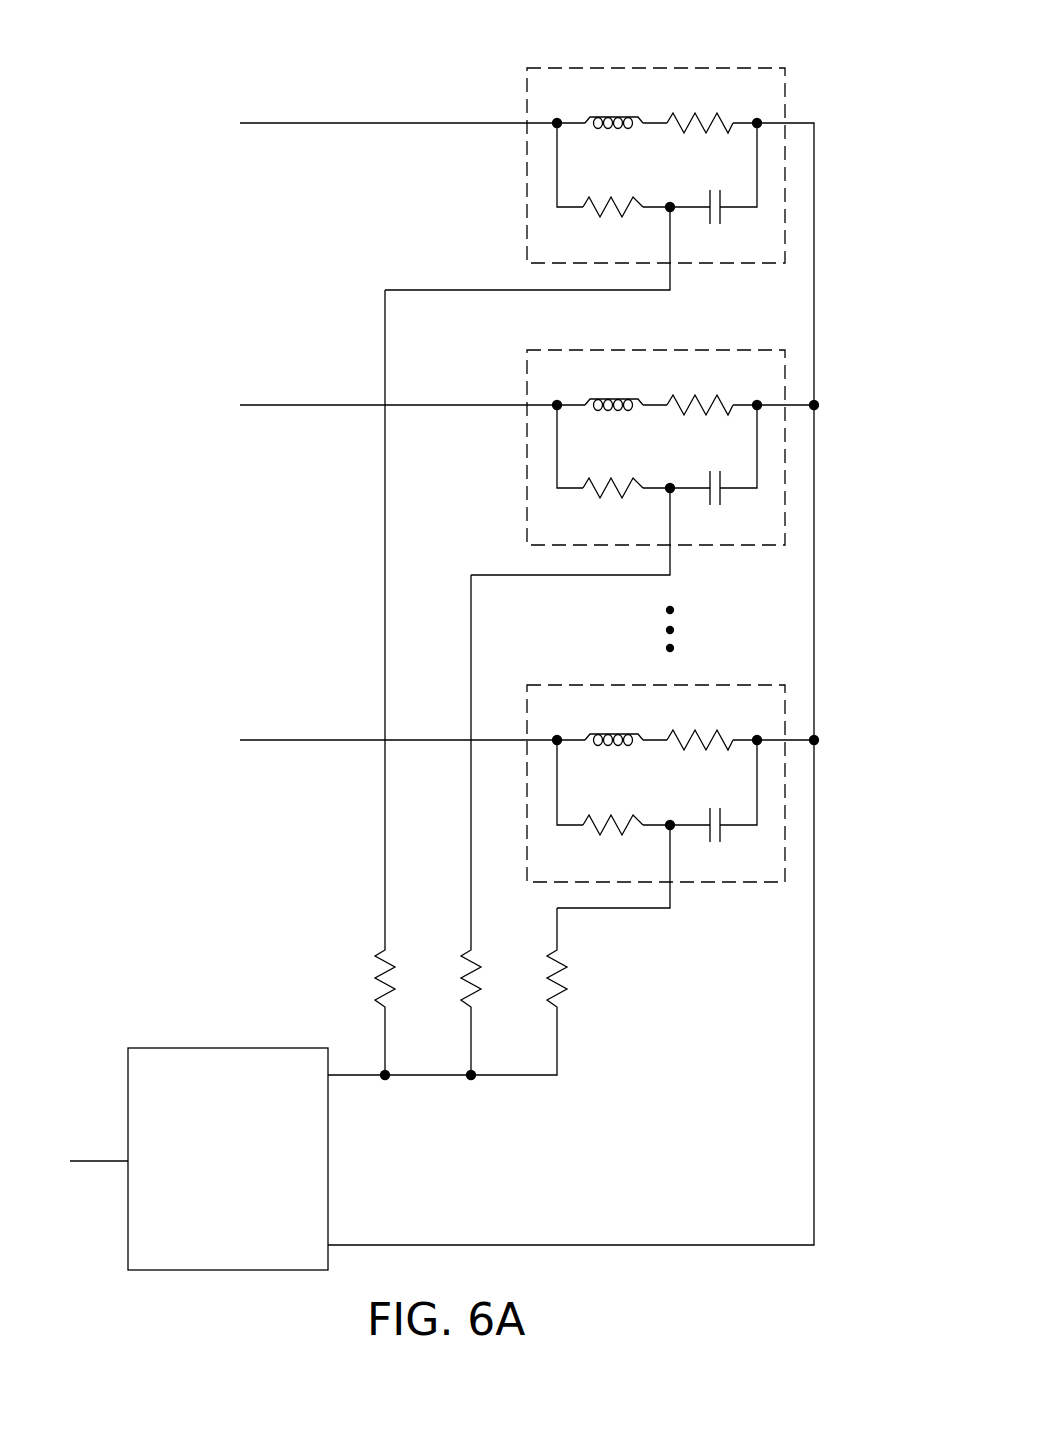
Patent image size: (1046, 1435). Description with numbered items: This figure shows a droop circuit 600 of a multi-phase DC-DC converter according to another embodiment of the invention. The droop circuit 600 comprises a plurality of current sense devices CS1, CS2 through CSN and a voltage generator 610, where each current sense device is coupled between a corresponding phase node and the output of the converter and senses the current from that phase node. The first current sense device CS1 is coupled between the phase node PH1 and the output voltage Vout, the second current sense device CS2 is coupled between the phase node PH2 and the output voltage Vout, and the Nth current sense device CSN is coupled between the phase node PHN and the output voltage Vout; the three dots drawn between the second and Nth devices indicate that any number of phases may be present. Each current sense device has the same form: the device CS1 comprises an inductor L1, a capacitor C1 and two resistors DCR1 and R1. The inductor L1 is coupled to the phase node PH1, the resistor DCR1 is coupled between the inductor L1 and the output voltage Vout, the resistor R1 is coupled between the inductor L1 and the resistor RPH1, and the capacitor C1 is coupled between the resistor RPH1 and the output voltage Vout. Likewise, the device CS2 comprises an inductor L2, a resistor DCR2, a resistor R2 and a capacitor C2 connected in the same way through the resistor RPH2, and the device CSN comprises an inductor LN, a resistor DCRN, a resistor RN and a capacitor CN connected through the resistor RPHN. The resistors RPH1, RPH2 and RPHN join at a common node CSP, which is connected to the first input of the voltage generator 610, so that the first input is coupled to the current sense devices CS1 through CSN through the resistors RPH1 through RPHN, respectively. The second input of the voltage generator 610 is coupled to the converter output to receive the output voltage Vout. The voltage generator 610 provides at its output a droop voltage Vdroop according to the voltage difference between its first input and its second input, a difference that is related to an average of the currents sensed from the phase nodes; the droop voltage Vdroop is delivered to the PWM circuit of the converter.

The droop circuit 600 is at (148, 66).
The voltage generator 610 is at (155, 1048).
The current sense device CS1 is at (656, 146).
The current sense device CS2 is at (656, 428).
The current sense device CSN is at (656, 764).
The inductor L1 is at (592, 116).
The inductor L2 is at (592, 398).
The inductor LN is at (592, 733).
The resistor DCR1 is at (684, 116).
The resistor DCR2 is at (684, 398).
The resistor DCRN is at (684, 733).
The resistor R1 is at (630, 219).
The resistor R2 is at (630, 500).
The resistor RN is at (630, 837).
The capacitor C1 is at (716, 228).
The capacitor C2 is at (716, 509).
The capacitor CN is at (716, 846).
The resistor RPH1 is at (398, 985).
The resistor RPH2 is at (484, 985).
The resistor RPHN is at (570, 985).
The non-inverting input CSP is at (471, 1075).
The phase node PH1 is at (366, 125).
The phase node PH2 is at (367, 405).
The phase node PHN is at (367, 742).
The output voltage Vout is at (604, 684).
The droop voltage Vdroop is at (80, 1139).